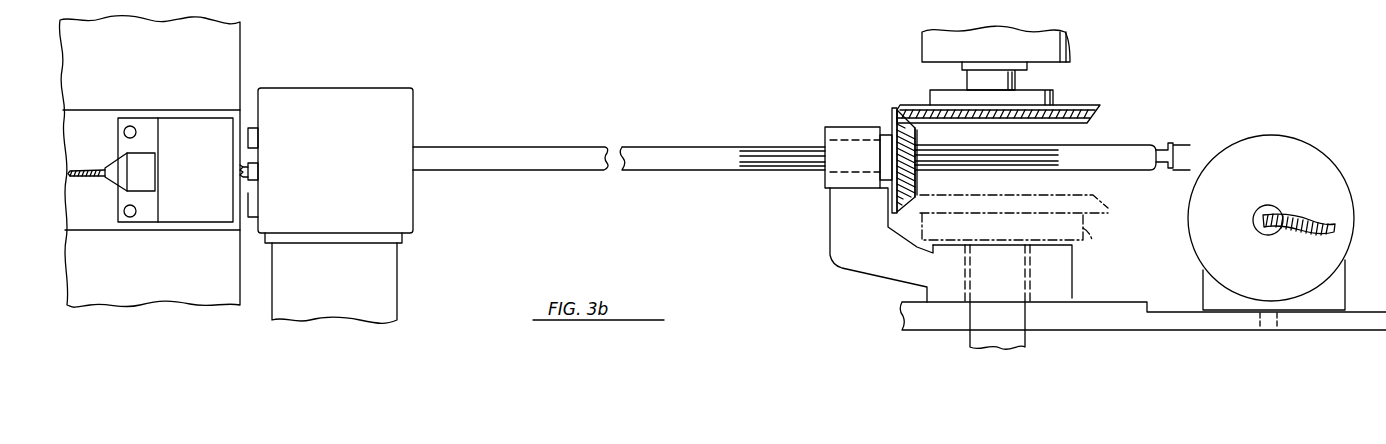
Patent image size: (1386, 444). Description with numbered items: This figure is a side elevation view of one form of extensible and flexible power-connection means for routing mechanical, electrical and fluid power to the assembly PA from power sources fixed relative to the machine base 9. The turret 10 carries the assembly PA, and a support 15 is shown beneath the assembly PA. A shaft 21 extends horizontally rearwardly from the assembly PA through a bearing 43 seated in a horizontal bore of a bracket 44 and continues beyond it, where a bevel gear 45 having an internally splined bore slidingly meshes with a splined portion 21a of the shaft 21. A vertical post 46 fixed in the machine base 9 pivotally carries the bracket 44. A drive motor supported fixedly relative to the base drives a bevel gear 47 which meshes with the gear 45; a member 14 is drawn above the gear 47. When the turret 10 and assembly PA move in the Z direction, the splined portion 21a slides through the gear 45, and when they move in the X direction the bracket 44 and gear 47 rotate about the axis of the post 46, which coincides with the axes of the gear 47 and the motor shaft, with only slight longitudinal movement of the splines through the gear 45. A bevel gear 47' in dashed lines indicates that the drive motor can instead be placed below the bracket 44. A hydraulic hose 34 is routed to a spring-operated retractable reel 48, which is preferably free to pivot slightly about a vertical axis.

The turret 10 is at (232, 53).
The assembly PA is at (378, 95).
The support pedestal 15 is at (400, 282).
The shaft 21 is at (618, 168).
The splined portion 21a is at (782, 172).
The bearing 43 is at (830, 137).
The bracket 44 is at (850, 258).
The bevel gear 45 is at (890, 118).
The carriage 14 is at (1006, 58).
The bevel gear 47 is at (1043, 125).
The bevel gear 47' is at (1032, 232).
The vertical post 46 is at (1027, 316).
The machine base 9 is at (1125, 318).
The retractable reel 48 is at (1272, 135).
The hydraulic hose 34 is at (1300, 218).